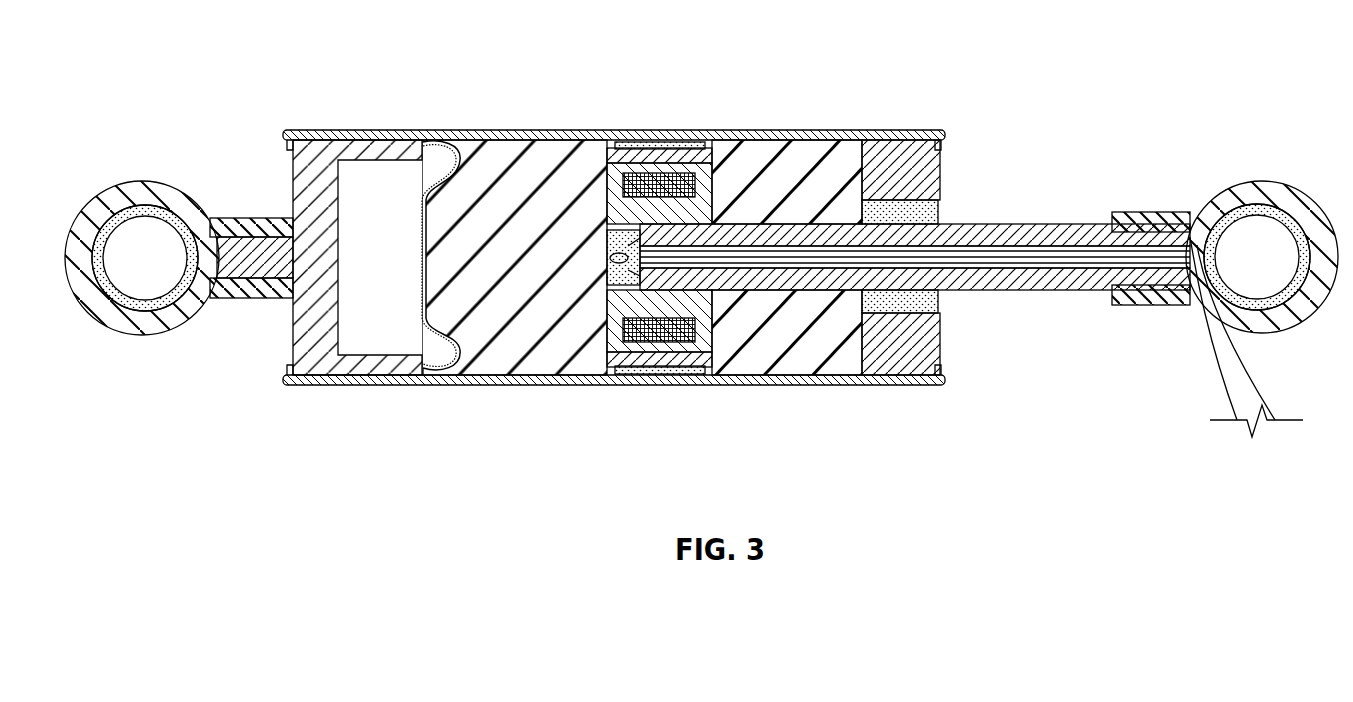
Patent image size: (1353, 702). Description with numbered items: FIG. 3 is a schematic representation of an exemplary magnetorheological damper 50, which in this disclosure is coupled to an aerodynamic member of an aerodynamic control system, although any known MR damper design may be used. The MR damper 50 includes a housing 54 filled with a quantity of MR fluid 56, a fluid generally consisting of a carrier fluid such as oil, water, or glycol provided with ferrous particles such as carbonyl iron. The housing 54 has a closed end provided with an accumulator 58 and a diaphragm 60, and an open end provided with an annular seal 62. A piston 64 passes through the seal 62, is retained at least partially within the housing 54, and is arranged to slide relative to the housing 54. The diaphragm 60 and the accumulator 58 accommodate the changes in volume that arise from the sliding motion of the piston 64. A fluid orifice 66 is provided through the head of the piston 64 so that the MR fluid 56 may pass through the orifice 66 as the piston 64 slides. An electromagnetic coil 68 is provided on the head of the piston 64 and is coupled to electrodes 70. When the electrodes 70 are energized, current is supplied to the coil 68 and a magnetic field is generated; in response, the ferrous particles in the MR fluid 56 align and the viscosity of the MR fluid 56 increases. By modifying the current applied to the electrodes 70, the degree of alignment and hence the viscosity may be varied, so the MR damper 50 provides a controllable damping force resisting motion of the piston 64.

The magnetorheological damper 50 is at (198, 95).
The housing 54 is at (514, 383).
The MR fluid 56 is at (789, 344).
The accumulator 58 is at (370, 213).
The diaphragm 60 is at (472, 156).
The annular seal 62 is at (900, 198).
The piston 64 is at (1012, 222).
The fluid orifice 66 is at (706, 170).
The electromagnetic coil 68 is at (660, 332).
The electrodes 70 is at (1218, 381).